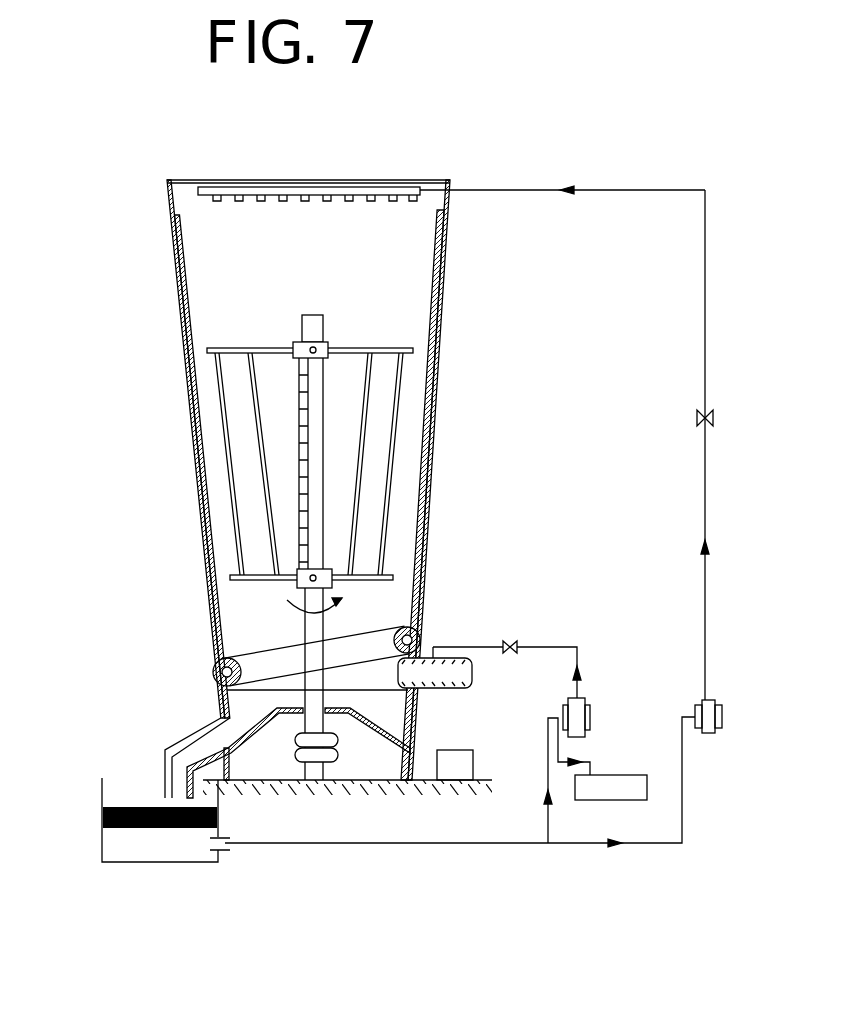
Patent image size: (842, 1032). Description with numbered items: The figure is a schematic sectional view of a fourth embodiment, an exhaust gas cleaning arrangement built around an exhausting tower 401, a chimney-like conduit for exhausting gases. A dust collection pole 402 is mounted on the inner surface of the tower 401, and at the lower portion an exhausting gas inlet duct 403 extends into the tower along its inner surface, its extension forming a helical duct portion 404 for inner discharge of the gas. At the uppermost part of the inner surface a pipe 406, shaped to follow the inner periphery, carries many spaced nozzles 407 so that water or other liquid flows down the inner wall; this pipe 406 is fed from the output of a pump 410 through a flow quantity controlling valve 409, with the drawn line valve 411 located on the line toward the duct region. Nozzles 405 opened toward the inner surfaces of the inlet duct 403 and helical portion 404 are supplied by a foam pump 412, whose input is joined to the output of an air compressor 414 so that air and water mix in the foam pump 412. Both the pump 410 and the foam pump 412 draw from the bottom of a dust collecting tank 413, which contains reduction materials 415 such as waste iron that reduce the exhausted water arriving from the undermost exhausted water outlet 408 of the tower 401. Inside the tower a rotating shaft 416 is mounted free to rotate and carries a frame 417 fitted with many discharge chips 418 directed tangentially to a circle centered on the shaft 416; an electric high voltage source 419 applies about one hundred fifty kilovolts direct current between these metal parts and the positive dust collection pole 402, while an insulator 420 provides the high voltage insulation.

The exhausting tower 401 is at (441, 277).
The dust collection pole 402 is at (434, 337).
The exhausting gas inlet duct 403 is at (445, 688).
The helical duct portion 404 is at (219, 672).
The nozzles 405 is at (436, 660).
The pipe 406 is at (397, 187).
The nozzles 407 is at (251, 202).
The exhausted water outlet 408 is at (165, 786).
The flow quantity controlling valve 409 is at (697, 417).
The pump 410 is at (699, 706).
The valve 411 is at (514, 645).
The foam pump 412 is at (580, 698).
The dust collecting tank 413 is at (102, 858).
The air compressor 414 is at (620, 775).
The reduction materials 415 is at (103, 810).
The rotating shaft 416 is at (312, 631).
The frame 417 is at (370, 368).
The discharge chips 418 is at (402, 406).
The electric high voltage source 419 is at (473, 762).
The insulator 420 is at (338, 753).